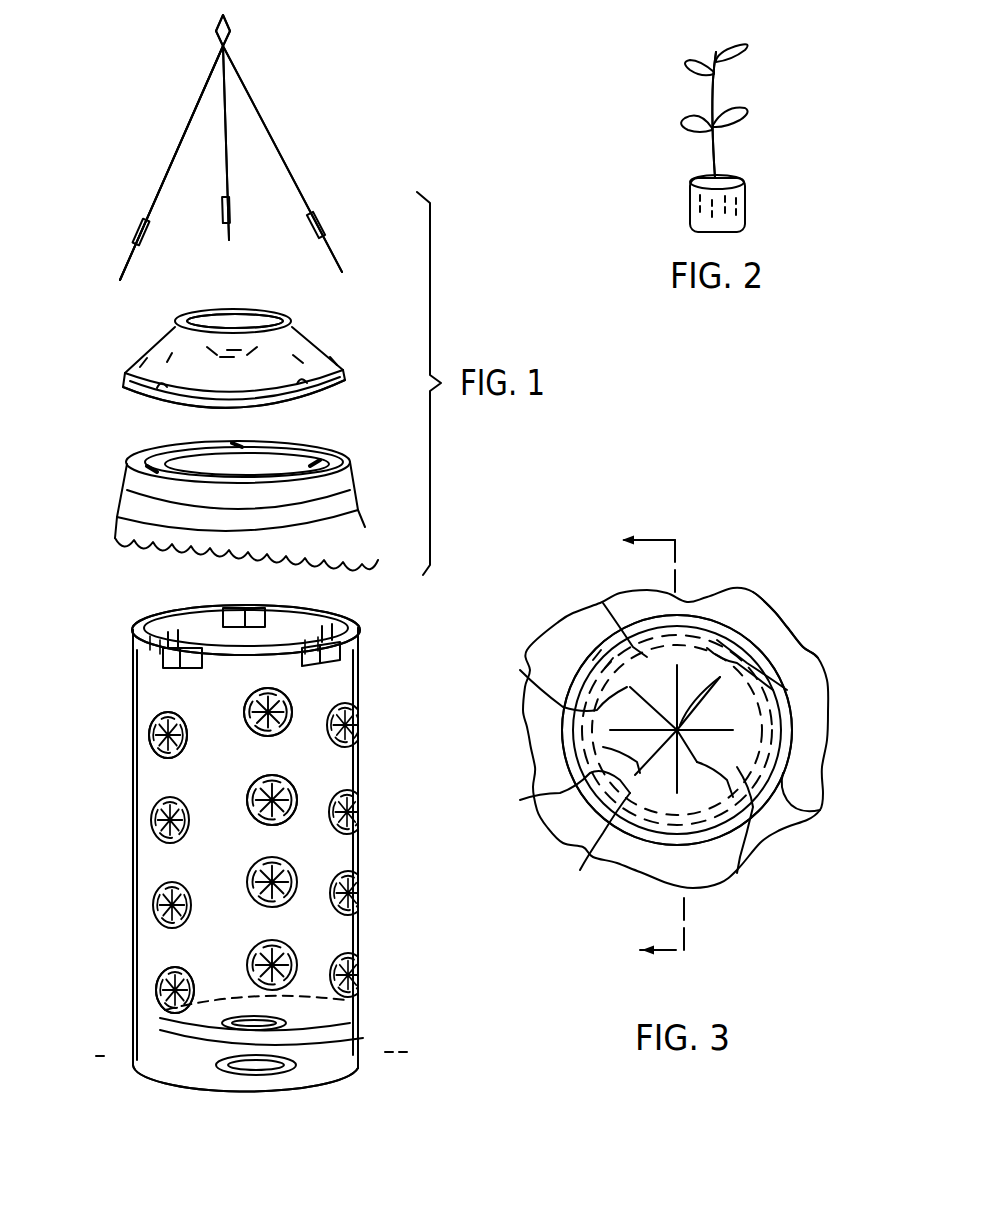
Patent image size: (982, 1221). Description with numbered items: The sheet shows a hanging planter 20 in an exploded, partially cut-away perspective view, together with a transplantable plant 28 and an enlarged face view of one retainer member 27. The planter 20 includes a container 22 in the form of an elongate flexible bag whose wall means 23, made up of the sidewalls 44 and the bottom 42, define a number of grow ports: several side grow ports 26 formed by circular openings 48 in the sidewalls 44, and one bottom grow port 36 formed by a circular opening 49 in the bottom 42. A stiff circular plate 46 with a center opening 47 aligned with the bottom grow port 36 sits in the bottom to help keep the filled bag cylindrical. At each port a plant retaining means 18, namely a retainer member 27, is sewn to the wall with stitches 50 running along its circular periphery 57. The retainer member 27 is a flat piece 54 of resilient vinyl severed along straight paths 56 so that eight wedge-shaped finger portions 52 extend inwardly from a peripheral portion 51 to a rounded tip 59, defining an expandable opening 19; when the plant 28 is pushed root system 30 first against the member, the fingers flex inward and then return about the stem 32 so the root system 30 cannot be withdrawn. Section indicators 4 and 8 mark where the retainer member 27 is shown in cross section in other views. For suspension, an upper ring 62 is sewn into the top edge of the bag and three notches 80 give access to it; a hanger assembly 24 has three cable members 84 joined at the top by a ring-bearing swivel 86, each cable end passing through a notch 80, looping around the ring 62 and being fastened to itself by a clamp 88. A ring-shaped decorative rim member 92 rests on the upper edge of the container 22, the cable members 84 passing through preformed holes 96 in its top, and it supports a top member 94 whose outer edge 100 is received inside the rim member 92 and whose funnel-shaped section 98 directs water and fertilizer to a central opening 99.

In FIG. 1, the section line 4- 4 is at (106, 1052).
In FIG. 3, the section line 8- 8 is at (646, 750).
In FIG. 1, the plant retaining means 18 is at (104, 758).
In FIG. 3, the expandable opening 19 is at (652, 655).
In FIG. 1, the planter 20 is at (320, 103).
In FIG. 3, the planter 20 is at (795, 845).
In FIG. 1, the container 22 is at (348, 690).
In FIG. 1, the wall means 23 is at (88, 626).
In FIG. 1, the hanger assembly 24 is at (206, 80).
In FIG. 1, the side grow ports 26 is at (365, 712).
In FIG. 3, the side grow ports 26 is at (760, 707).
In FIG. 1, the retainer member 27 is at (155, 713).
In FIG. 3, the retainer member 27 is at (707, 650).
In FIG. 2, the plant 28 is at (748, 48).
In FIG. 2, the root system 30 is at (748, 206).
In FIG. 2, the stem 32 is at (725, 146).
In FIG. 1, the bottom grow port 36 is at (300, 1090).
In FIG. 1, the bottom 42 is at (345, 1095).
In FIG. 1, the sidewalls 44 is at (135, 852).
In FIG. 3, the sidewalls 44 is at (805, 652).
In FIG. 1, the circular plate 46 is at (170, 1082).
In FIG. 1, the center opening 47 is at (202, 1088).
In FIG. 3, the circular openings 48 is at (767, 740).
In FIG. 1, the circular opening 49 is at (255, 1090).
In FIG. 3, the stitches 50 is at (812, 800).
In FIG. 3, the peripheral portion 51 is at (603, 747).
In FIG. 3, the finger portions 52 is at (603, 833).
In FIG. 3, the flat piece 54 is at (647, 663).
In FIG. 3, the straight paths 56 is at (600, 690).
In FIG. 3, the circular periphery 57 is at (560, 793).
In FIG. 3, the tip 59 is at (733, 647).
In FIG. 1, the upper ring 62 is at (183, 648).
In FIG. 1, the notches 80 is at (255, 624).
In FIG. 1, the cable members 84 is at (178, 148).
In FIG. 1, the ring-bearing swivel 86 is at (236, 22).
In FIG. 1, the clamp 88 is at (229, 205).
In FIG. 1, the decorative rim member 92 is at (120, 508).
In FIG. 1, the top member 94 is at (148, 367).
In FIG. 1, the preformed holes 96 is at (160, 462).
In FIG. 1, the funnel-shaped section 98 is at (253, 303).
In FIG. 1, the central opening 99 is at (250, 345).
In FIG. 1, the outer edge 100 is at (128, 400).